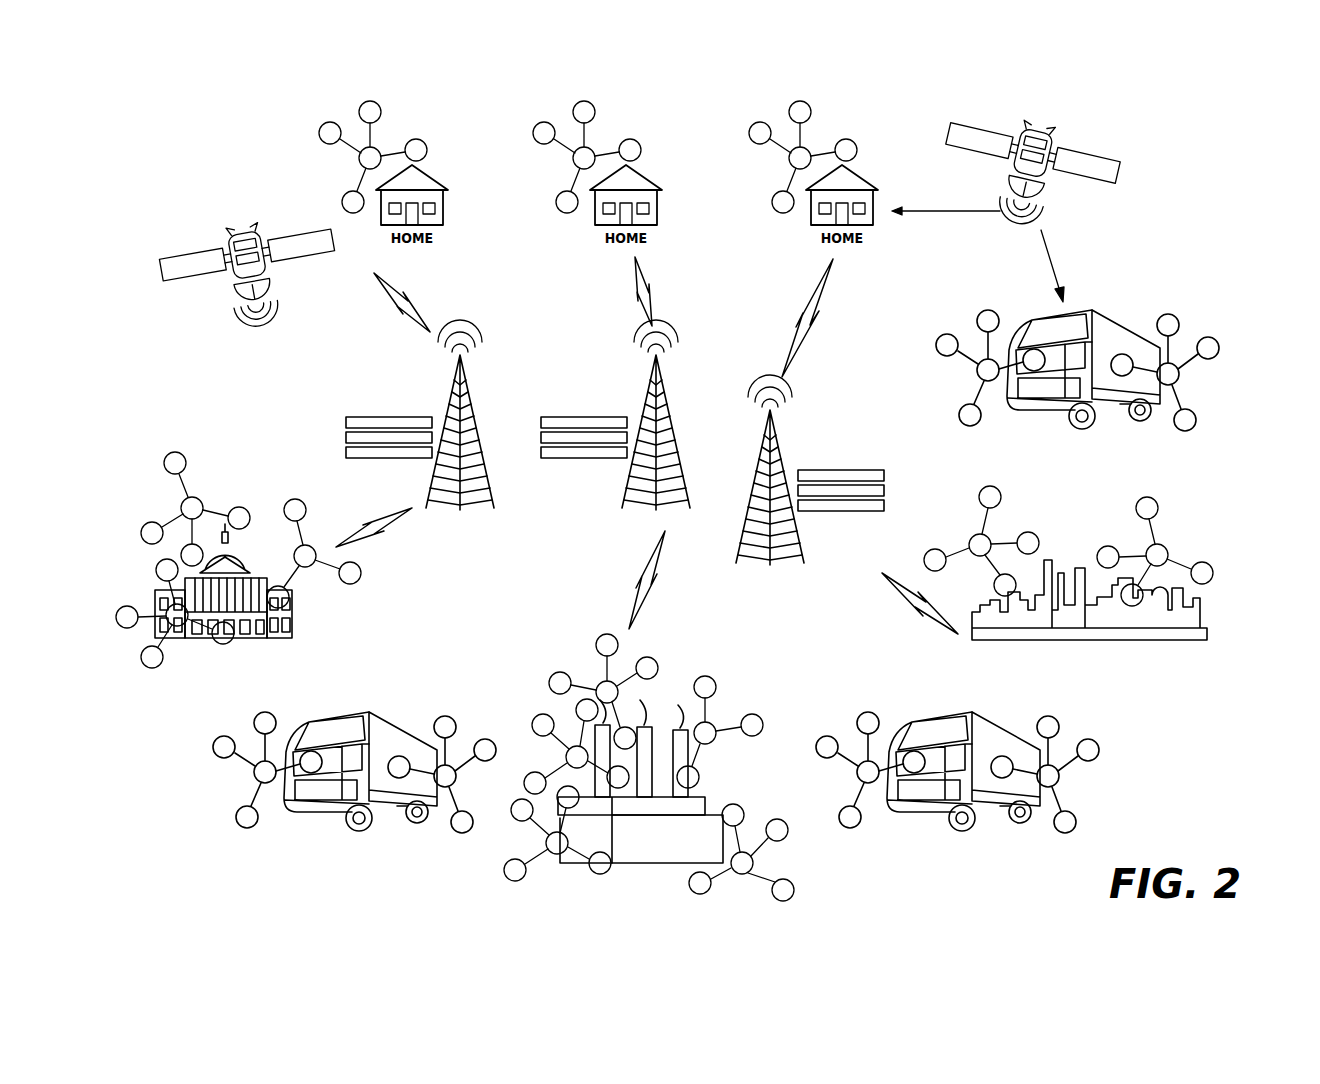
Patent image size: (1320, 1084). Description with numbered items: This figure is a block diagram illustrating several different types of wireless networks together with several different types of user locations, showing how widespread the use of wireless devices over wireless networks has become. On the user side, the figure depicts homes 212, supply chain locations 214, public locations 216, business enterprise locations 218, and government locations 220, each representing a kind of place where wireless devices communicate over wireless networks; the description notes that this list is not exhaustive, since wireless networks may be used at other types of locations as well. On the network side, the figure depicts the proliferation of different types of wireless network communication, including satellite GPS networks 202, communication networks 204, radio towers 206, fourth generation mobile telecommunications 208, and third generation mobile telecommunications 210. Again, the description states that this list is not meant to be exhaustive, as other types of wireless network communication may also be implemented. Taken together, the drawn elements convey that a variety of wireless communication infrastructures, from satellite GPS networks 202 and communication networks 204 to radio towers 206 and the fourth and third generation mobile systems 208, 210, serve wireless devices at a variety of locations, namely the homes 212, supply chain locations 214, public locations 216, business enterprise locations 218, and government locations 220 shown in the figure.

The satellite GPS network 202 is at (1093, 166).
The communication network 204 is at (190, 262).
The radio tower 206 is at (475, 426).
The fourth generation (4G) mobile telecommunications 208 is at (364, 423).
The third generation (3G) mobile telecommunications 210 is at (867, 476).
The home 212 is at (424, 186).
The supply chain location 214 is at (1133, 340).
The public location 216 is at (1053, 560).
The business enterprise location 218 is at (710, 825).
The government location 220 is at (287, 622).